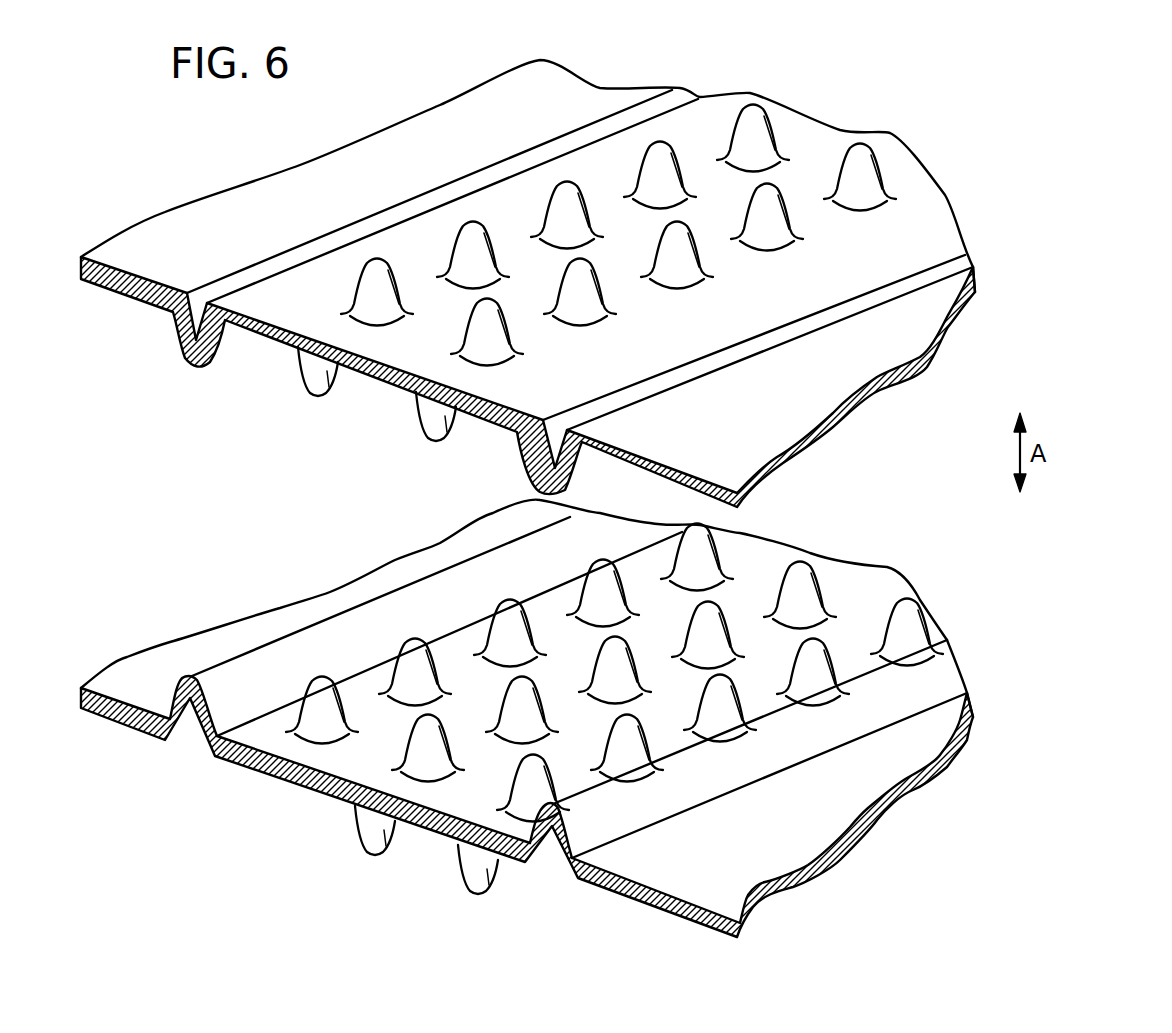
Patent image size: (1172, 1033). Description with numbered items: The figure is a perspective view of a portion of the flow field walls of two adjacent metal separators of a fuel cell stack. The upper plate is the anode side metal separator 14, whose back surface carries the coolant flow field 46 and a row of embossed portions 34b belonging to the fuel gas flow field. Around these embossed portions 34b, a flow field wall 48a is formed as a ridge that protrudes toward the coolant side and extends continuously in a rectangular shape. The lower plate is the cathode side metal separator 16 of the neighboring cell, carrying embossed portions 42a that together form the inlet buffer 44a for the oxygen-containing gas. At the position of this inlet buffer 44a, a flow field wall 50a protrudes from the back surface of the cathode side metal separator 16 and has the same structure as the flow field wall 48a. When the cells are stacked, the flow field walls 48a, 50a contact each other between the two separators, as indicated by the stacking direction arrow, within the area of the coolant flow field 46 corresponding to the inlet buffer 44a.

The anode side metal separator 14 is at (183, 202).
The cathode side metal separator 16 is at (903, 822).
The embossed portions 34b is at (470, 243).
The embossed portions 42a is at (428, 668).
The inlet buffer 44a is at (263, 772).
The coolant flow field 46 is at (347, 477).
The flow field wall 48a is at (232, 342).
The flow field wall 50a is at (275, 660).